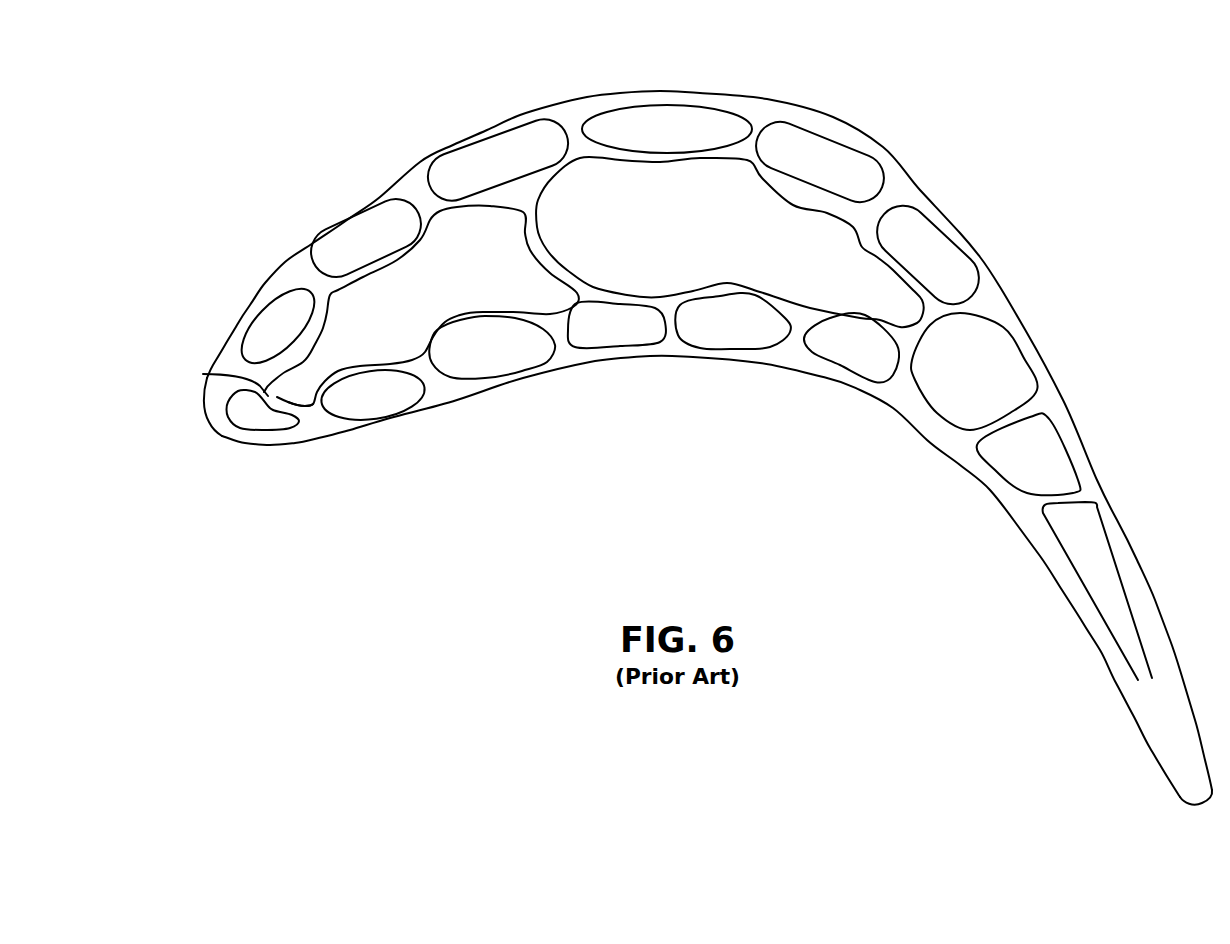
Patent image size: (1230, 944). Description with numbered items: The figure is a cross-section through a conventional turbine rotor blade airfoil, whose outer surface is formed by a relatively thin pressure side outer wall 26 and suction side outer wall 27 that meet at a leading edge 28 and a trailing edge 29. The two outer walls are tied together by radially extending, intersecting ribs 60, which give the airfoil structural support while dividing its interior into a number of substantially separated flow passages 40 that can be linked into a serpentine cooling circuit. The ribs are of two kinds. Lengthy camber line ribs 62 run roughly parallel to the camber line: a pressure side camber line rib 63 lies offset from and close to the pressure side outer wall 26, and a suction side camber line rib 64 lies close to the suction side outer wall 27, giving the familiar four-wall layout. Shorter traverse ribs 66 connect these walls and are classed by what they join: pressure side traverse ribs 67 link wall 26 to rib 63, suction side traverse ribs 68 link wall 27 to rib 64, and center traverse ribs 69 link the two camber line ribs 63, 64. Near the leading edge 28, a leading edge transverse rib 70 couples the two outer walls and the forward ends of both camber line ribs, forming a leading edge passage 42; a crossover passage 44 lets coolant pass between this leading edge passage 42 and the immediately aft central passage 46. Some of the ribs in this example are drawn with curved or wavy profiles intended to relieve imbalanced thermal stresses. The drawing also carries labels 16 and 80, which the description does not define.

The airfoil 16 is at (303, 111).
The pressure side outer wall 26 is at (970, 467).
The suction side outer wall 27 is at (460, 142).
The leading edge 28 is at (218, 433).
The trailing edge 29 is at (1185, 807).
The flow passages 40 is at (647, 125).
The leading edge passage 42 is at (262, 418).
The crossover passage 44 is at (207, 375).
The central passage 46 is at (417, 321).
The ribs 60 is at (478, 203).
The camber line rib 62 is at (539, 232).
The pressure side camber line rib 63 is at (750, 288).
The suction side camber line rib 64 is at (388, 265).
The traverse rib 66 is at (606, 285).
The pressure side traverse rib 67 is at (423, 373).
The suction side traverse rib 68 is at (760, 142).
The center traverse rib 69 is at (540, 250).
The leading edge transverse rib 70 is at (306, 410).
The impingement slots 80 is at (313, 405).